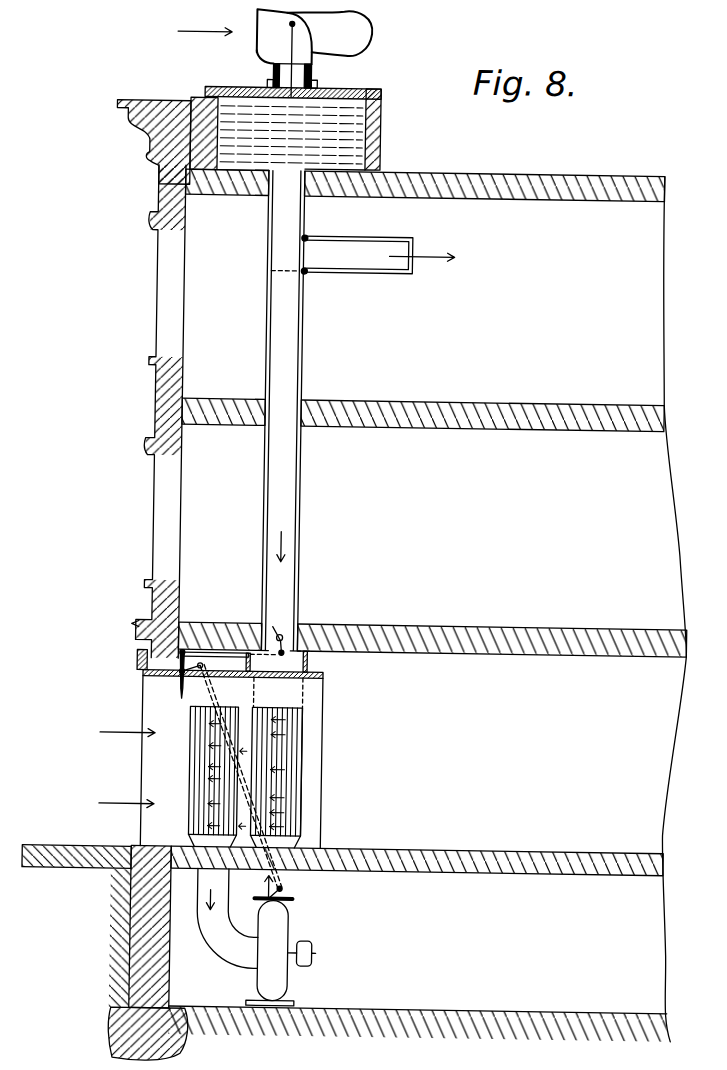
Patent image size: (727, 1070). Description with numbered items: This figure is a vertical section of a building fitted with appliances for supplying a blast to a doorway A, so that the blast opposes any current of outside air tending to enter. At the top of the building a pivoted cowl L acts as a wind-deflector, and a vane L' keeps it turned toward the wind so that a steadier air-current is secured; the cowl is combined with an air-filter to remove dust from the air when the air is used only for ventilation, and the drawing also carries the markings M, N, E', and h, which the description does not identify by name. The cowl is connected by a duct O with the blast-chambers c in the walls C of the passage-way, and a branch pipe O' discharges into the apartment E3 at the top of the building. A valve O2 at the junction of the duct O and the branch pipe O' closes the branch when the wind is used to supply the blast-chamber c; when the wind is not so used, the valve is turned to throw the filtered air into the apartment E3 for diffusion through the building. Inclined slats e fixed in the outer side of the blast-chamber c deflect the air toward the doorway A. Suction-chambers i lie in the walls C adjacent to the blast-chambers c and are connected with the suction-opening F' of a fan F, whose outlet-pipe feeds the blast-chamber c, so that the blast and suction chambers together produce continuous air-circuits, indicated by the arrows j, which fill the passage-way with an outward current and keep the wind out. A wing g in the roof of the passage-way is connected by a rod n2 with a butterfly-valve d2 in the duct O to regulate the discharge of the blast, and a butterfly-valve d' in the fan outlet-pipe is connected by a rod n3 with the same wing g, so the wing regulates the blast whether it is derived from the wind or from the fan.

The pivoted cowl L is at (271, 53).
The vane L' is at (348, 33).
The screen box M is at (375, 106).
The screens N is at (342, 123).
The duct O is at (301, 410).
The branch pipe O' is at (363, 274).
The valve O2 is at (303, 251).
The apartment E3 is at (431, 605).
The building wall E' is at (150, 379).
The rod n2 is at (226, 651).
The butterfly-valve d2 is at (277, 629).
The doorway A is at (141, 670).
The wing g is at (184, 692).
The air inlet flow h is at (127, 758).
The suction-chamber i is at (196, 797).
The arrows j is at (276, 735).
The walls C is at (333, 740).
The blast-chamber c is at (308, 778).
The inclined slats e is at (288, 826).
The butterfly-valve d' is at (260, 884).
The rod n3 is at (296, 876).
The suction-opening F' is at (227, 937).
The fan F is at (284, 940).